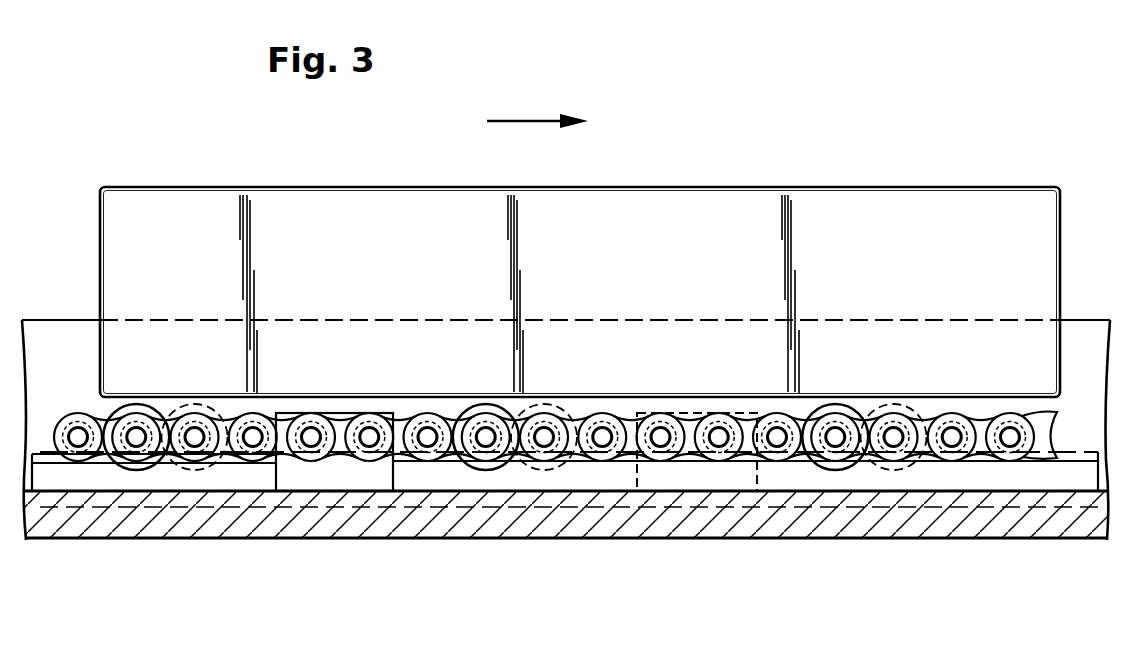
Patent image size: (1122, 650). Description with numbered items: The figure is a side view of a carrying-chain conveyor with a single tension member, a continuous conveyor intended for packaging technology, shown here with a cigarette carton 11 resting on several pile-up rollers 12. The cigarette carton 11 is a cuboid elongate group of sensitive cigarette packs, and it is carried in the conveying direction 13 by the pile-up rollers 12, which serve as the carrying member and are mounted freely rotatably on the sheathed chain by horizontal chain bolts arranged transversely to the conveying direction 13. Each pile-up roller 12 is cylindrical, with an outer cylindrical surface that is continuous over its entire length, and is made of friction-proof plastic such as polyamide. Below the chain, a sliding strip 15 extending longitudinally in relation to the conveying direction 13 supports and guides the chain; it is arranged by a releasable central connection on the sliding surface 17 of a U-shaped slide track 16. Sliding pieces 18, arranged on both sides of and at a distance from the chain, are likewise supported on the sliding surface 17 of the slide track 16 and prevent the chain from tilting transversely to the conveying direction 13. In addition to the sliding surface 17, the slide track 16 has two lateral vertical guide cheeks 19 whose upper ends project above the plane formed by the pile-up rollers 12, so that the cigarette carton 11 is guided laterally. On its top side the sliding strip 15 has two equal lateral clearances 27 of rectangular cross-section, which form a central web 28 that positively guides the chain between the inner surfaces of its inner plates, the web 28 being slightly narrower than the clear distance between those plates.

The cigarette carton 11 is at (366, 205).
The pile-up roller 12 is at (183, 470).
The conveying direction 13 is at (520, 120).
The sliding strip 15 is at (233, 477).
The slide track 16 is at (428, 517).
The sliding surface 17 is at (597, 482).
The sliding piece 18 is at (327, 478).
The guide cheek 19 is at (56, 338).
The lateral clearance 27 is at (38, 458).
The central web 28 is at (39, 450).